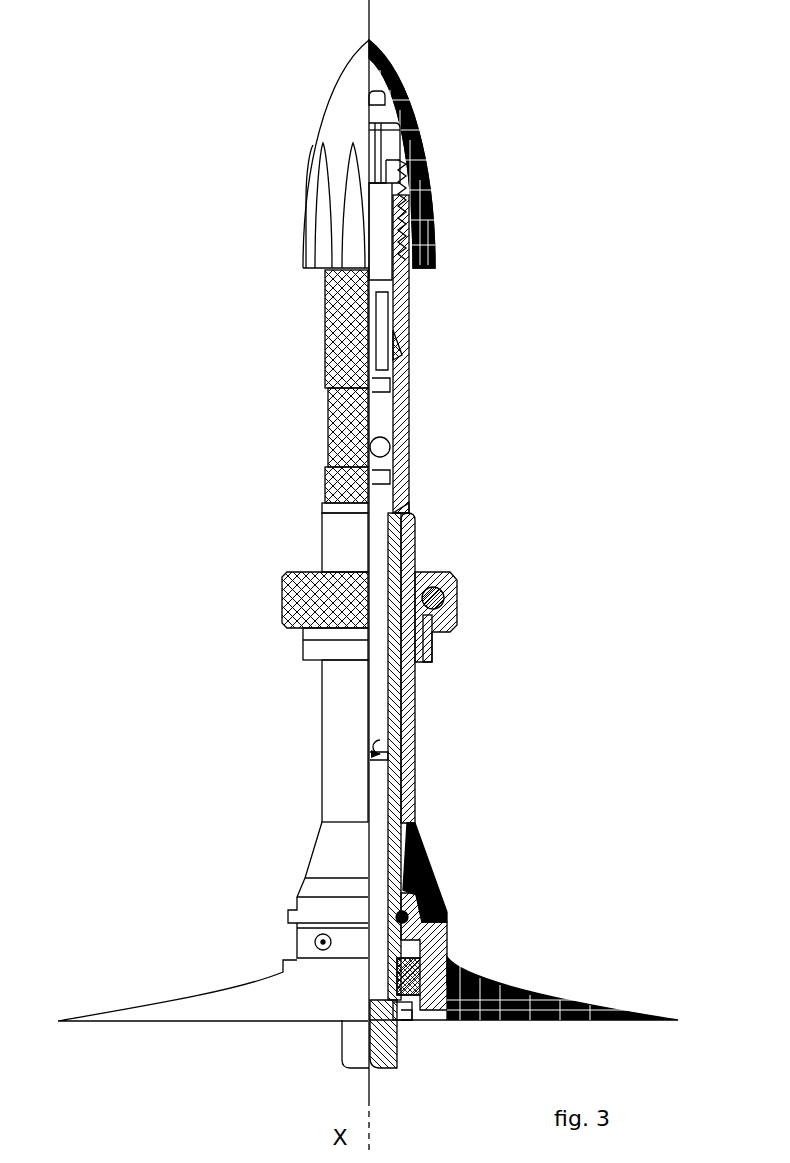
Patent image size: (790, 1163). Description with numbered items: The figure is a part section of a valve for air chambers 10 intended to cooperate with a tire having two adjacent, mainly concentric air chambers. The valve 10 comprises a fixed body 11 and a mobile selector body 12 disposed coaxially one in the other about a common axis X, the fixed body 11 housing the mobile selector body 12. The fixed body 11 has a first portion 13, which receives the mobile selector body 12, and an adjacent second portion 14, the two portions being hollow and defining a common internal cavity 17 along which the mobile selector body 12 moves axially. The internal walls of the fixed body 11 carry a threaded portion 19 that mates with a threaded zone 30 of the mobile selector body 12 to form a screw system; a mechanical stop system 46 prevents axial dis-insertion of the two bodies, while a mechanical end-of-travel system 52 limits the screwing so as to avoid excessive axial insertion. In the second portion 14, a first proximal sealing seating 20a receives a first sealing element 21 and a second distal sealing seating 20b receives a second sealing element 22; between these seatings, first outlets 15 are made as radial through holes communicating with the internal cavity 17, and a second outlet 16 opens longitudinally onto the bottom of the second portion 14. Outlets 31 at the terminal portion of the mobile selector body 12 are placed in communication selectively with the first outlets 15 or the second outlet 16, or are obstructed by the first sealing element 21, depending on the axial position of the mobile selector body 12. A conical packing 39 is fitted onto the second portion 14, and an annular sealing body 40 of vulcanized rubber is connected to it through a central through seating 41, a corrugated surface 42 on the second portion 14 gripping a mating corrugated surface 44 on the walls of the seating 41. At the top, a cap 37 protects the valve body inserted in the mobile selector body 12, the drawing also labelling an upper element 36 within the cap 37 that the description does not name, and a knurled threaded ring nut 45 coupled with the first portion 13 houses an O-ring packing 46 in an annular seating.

The valve for air chambers 10 is at (182, 126).
The fixed body 11 is at (419, 552).
The mobile selector body 12 is at (411, 418).
The first portion 13 is at (321, 700).
The second portion 14 is at (432, 932).
The first outlet 15 is at (316, 942).
The second outlet 16 is at (413, 1021).
The internal cavity 17 is at (408, 752).
The threaded portion 19 is at (406, 680).
The first proximal sealing seating 20a is at (441, 913).
The second distal sealing seating 20b is at (446, 956).
The first sealing element 21 is at (434, 893).
The second sealing element 22 is at (405, 980).
The threaded zone 30 is at (398, 545).
The outlets 31 is at (382, 1066).
The cap insert 36 is at (390, 118).
The cap 37 is at (437, 220).
The packing 39 is at (424, 871).
The sealing body 40 is at (575, 1004).
The central through seating 41 is at (405, 1024).
The corrugated surface 42 is at (462, 1020).
The mating corrugated surface 44 is at (456, 976).
The threaded ring nut 45 is at (440, 585).
The packing 46 is at (438, 612).
The mechanical end-of-travel system 52 is at (416, 512).